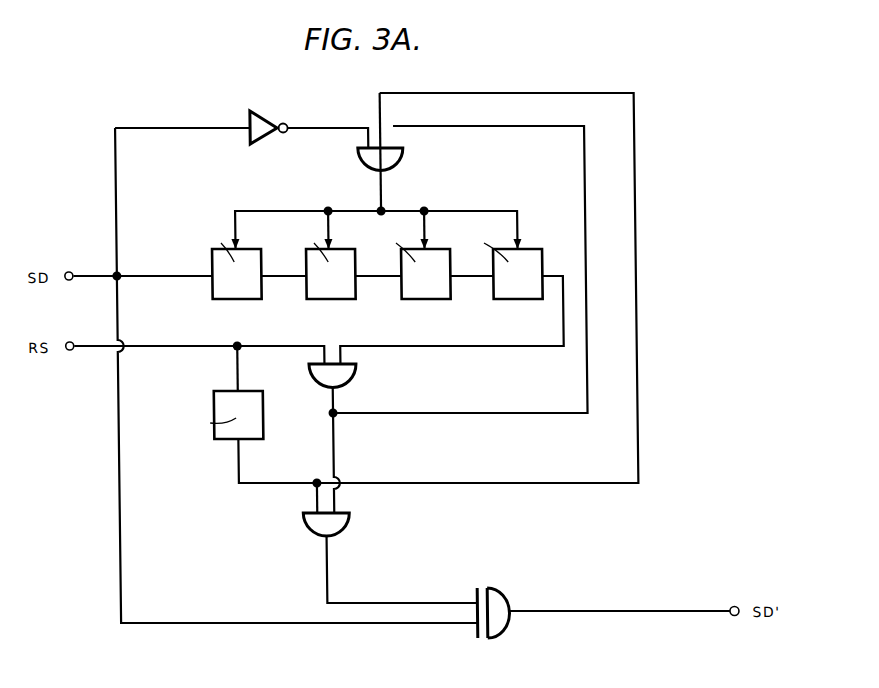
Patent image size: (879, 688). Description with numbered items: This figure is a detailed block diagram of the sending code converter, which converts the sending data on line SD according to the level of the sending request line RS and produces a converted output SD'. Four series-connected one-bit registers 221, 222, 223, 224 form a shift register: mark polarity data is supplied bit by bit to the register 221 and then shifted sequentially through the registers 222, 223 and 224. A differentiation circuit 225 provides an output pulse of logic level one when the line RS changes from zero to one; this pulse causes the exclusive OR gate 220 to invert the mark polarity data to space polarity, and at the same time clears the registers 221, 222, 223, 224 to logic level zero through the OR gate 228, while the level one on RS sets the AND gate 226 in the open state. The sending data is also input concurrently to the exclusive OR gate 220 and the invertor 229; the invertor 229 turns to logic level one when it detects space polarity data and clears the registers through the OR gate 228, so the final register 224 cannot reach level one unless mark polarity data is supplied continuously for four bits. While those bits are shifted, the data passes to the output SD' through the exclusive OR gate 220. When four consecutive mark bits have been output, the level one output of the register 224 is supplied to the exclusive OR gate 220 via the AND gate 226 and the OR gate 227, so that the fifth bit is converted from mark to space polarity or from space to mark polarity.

The exclusive OR gate 220 is at (497, 594).
The 1-bit register 221 is at (218, 299).
The 1-bit register 222 is at (314, 299).
The 1-bit register 223 is at (411, 299).
The 1-bit register 224 is at (511, 299).
The differentiation circuit 225 is at (215, 439).
The AND gate 226 is at (349, 376).
The OR gate 227 is at (343, 521).
The OR gate 228 is at (399, 156).
The invertor 229 is at (261, 111).